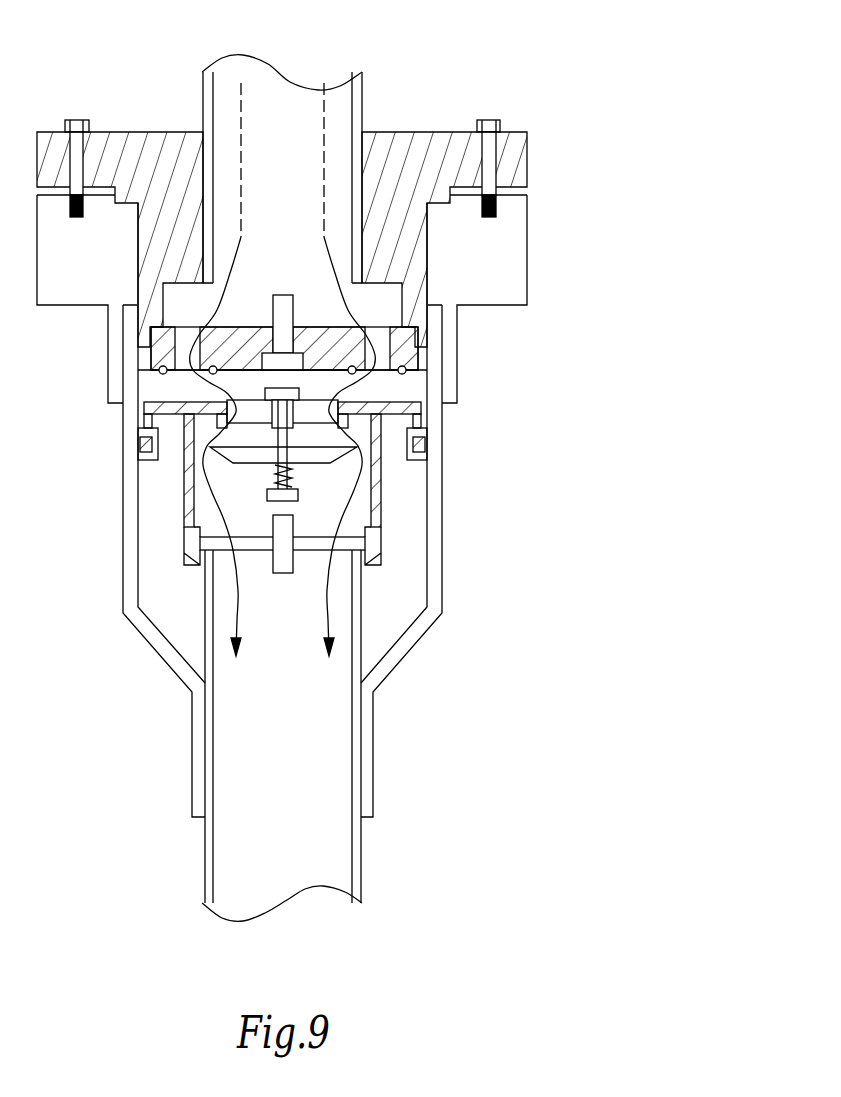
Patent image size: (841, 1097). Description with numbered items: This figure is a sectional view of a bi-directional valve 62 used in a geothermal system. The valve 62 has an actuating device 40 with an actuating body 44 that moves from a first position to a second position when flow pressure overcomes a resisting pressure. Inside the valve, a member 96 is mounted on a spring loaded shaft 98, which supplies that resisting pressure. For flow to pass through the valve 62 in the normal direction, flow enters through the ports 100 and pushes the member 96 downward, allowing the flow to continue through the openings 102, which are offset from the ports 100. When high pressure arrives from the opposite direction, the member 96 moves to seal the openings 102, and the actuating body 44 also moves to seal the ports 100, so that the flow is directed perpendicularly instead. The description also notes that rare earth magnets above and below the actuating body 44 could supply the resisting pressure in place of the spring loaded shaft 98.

The valve 62 is at (452, 41).
The actuating device 40 is at (412, 375).
The actuating body 44 is at (428, 397).
The member 96 is at (332, 453).
The spring loaded shaft 98 is at (277, 477).
The ports 100 is at (383, 352).
The openings 102 is at (335, 413).